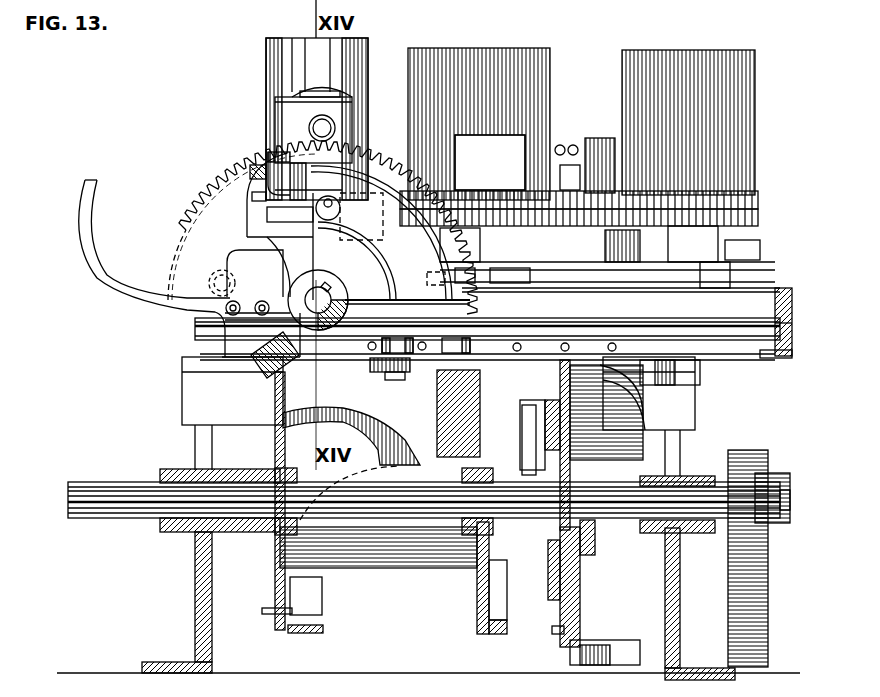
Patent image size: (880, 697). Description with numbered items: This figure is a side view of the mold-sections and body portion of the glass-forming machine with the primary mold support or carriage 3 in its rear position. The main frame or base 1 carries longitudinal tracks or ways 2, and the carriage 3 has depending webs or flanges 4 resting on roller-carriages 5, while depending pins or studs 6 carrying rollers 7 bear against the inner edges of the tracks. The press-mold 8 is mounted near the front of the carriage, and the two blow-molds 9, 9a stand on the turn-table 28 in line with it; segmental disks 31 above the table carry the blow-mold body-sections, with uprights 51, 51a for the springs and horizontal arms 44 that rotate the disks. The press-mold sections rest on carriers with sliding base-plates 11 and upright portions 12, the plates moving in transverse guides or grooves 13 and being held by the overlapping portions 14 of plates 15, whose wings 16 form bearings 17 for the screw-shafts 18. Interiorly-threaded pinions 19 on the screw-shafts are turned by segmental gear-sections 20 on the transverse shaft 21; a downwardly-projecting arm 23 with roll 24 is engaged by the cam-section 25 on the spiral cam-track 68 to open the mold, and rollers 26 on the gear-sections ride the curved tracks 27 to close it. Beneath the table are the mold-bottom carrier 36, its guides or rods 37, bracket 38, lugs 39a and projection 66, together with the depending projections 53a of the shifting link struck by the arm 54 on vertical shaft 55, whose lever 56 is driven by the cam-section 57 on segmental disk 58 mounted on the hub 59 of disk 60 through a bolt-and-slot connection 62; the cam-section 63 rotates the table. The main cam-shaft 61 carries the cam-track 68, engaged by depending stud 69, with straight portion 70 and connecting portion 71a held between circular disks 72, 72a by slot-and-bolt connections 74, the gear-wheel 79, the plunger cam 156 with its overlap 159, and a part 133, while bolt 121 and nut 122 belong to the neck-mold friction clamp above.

The main frame or base 1 is at (681, 590).
The longitudinal tracks or ways 2 is at (438, 416).
The primary mold support or carriage 3 is at (610, 286).
The depending webs or flanges 4 is at (628, 333).
The roller-carriages 5 is at (637, 352).
The depending pins or studs 6 is at (397, 346).
The rollers 7 is at (410, 378).
The press-mold 8 is at (267, 72).
The blow-mold 9 is at (537, 76).
The blow-mold 9a is at (757, 127).
The sliding base-plates 11 is at (290, 216).
The upright portions 12 is at (340, 96).
The transverse guides or grooves 13 is at (247, 218).
The overlapping portions 14 is at (255, 172).
The plates 15 is at (258, 203).
The wings 16 is at (266, 152).
The bearings 17 is at (313, 130).
The screw-shafts 18 is at (336, 128).
The interiorly-threaded pinions 19 is at (330, 95).
The segmental gear-sections 20 is at (322, 227).
The transverse shaft 21 is at (330, 297).
The downwardly-projecting arm 23 is at (232, 322).
The roll 24 is at (268, 372).
The cam-section 25 is at (320, 420).
The rollers 26 is at (330, 202).
The forwardly and upwardly curved tracks 27 is at (108, 277).
The turn-table 28 is at (758, 223).
The segmental disks 31 is at (758, 199).
The sliding mold-bottom carrier 36 is at (579, 244).
The guides or rods 37 is at (760, 250).
The bracket 38 is at (638, 246).
The lug 39a is at (476, 273).
The horizontal arms 44 is at (568, 165).
The upright 51 is at (545, 145).
The upright 51a is at (585, 140).
The depending projections 53a is at (513, 273).
The arm 54 is at (772, 290).
The vertical shaft 55 is at (792, 323).
The lever 56 is at (770, 358).
The cam-section 57 is at (600, 645).
The segmental disk 58 is at (581, 583).
The hub 59 is at (590, 530).
The disk 60 is at (568, 440).
The main cam-shaft 61 is at (105, 482).
The bolt-and-slot connection 62 is at (556, 630).
The cam-section 63 is at (606, 414).
The projection 66 is at (722, 272).
The spiral cam-track 68 is at (378, 557).
The depending stud 69 is at (456, 346).
The straight portion 70 is at (305, 605).
The longitudinal connecting portion 71a is at (384, 496).
The circular disk 72 is at (275, 583).
The circular disk 72a is at (478, 607).
The slot-and-bolt connections 74 is at (268, 612).
The gear-wheel 79 is at (764, 558).
The bolt 121 is at (545, 424).
The nut 122 is at (530, 446).
The bracket 133 is at (550, 587).
The cam 156 is at (485, 380).
The overlap 159 is at (498, 600).